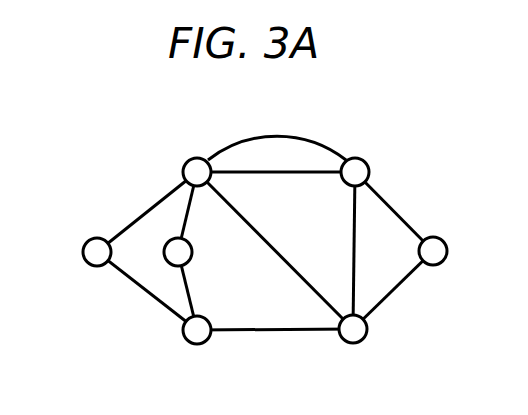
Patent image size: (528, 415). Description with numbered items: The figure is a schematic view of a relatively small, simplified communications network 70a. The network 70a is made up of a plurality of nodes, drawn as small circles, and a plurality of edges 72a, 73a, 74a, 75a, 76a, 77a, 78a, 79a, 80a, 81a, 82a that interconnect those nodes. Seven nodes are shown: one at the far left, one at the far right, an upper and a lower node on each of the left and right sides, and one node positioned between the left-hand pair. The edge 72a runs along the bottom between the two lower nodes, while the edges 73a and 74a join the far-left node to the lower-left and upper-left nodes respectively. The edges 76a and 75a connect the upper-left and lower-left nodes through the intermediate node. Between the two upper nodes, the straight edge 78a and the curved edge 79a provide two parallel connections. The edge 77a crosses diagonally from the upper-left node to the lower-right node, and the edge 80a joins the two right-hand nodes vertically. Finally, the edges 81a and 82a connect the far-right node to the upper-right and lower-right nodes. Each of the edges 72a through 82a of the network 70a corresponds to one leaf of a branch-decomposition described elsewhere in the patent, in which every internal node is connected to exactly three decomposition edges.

The communications network 70a is at (466, 184).
The edge 72a is at (263, 333).
The edge 73a is at (148, 295).
The edge 74a is at (142, 213).
The edge 75a is at (193, 293).
The edge 76a is at (188, 212).
The edge 77a is at (308, 281).
The edge 78a is at (295, 173).
The edge 79a is at (280, 133).
The edge 80a is at (357, 282).
The edge 81a is at (400, 210).
The edge 82a is at (392, 297).